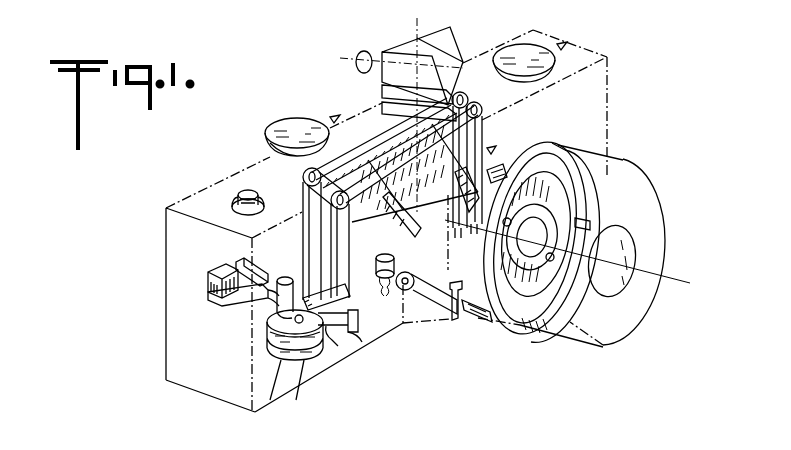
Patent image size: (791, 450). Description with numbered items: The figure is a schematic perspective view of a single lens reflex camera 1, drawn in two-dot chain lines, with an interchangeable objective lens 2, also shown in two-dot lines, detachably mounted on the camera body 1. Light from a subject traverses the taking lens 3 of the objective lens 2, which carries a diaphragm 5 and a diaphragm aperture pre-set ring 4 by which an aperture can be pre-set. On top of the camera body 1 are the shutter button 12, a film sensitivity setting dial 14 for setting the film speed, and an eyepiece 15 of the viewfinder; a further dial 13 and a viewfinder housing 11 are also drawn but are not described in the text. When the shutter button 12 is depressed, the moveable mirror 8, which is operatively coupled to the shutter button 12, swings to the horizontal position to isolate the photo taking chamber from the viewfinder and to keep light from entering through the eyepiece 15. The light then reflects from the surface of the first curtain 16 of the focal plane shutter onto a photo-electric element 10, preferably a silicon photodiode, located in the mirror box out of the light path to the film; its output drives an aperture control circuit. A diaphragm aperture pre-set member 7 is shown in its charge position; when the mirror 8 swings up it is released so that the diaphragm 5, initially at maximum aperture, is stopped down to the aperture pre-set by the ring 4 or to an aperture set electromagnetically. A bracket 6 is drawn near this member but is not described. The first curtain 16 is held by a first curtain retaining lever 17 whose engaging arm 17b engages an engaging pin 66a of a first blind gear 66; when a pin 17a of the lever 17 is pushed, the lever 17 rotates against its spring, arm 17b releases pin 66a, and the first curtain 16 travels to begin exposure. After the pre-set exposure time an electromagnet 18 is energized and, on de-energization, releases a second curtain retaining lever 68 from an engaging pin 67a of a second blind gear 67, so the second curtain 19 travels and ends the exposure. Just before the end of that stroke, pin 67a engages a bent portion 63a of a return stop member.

The camera 1 is at (595, 45).
The interchangeable objective lens 2 is at (604, 165).
The taking lens 3 is at (622, 226).
The diaphragm aperture pre-set ring 4 is at (540, 160).
The diaphragm 5 is at (563, 183).
The bracket post 6 is at (457, 318).
The diaphragm aperture pre-set member 7 is at (438, 336).
The moveable mirror 8 is at (414, 226).
The photo-electric element 10 is at (383, 250).
The pentaprism 11 is at (412, 47).
The shutter button 12 is at (247, 190).
The shutter speed dial 13 is at (285, 119).
The film sensitivity setting dial 14 is at (513, 50).
The eyepiece 15 is at (371, 53).
The first curtain 16 is at (400, 210).
The first curtain retaining lever 17 is at (354, 312).
The pin 17a is at (365, 333).
The engaging arm 17b is at (330, 338).
The electromagnet 18 is at (207, 297).
The second curtain 19 is at (342, 168).
The bent portion 63a is at (291, 277).
The first blind gear 66 is at (300, 400).
The engaging pin 66a is at (314, 386).
The second blind gear 67 is at (282, 364).
The engaging pin 67a is at (288, 324).
The second curtain retaining lever 68 is at (268, 306).